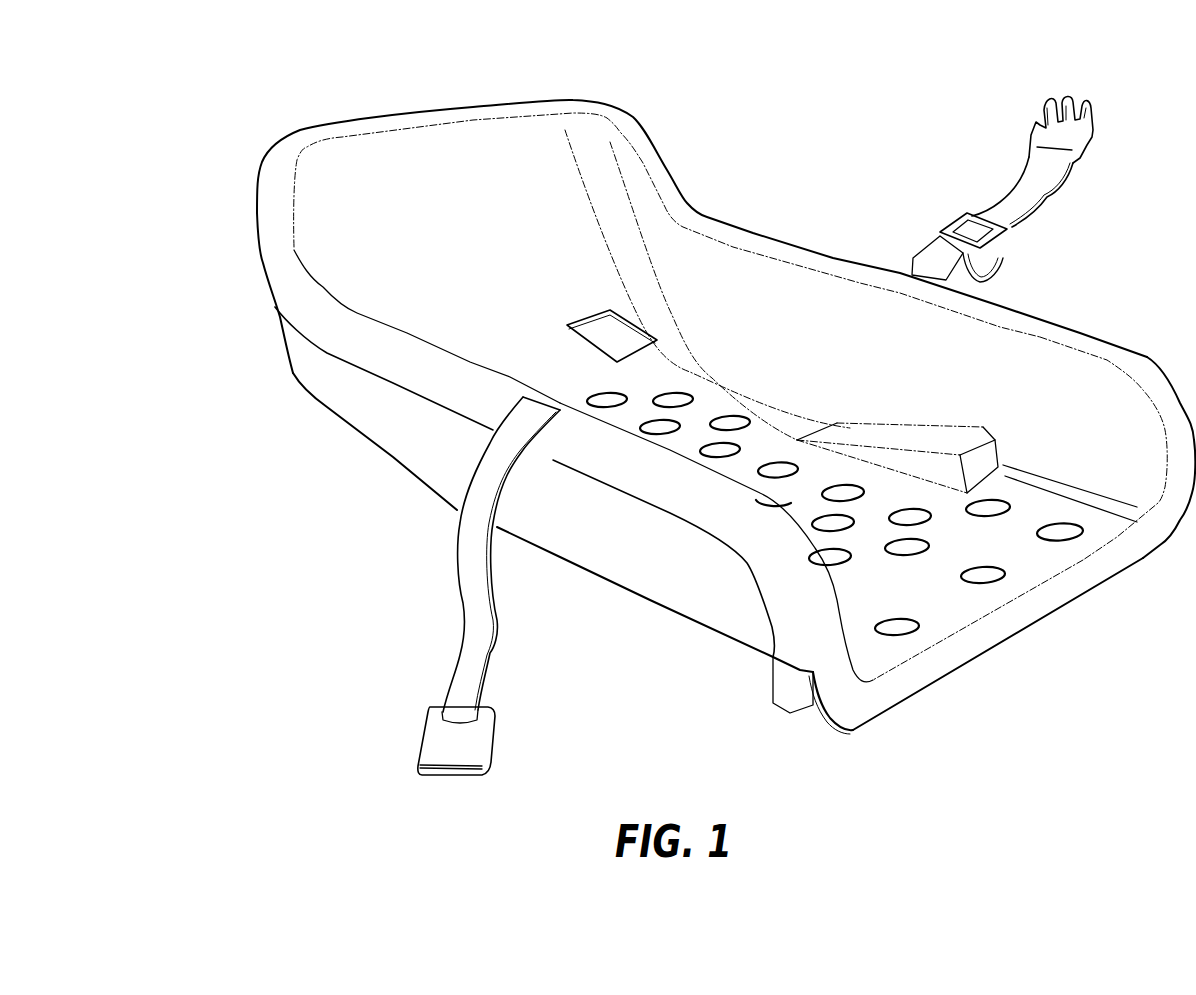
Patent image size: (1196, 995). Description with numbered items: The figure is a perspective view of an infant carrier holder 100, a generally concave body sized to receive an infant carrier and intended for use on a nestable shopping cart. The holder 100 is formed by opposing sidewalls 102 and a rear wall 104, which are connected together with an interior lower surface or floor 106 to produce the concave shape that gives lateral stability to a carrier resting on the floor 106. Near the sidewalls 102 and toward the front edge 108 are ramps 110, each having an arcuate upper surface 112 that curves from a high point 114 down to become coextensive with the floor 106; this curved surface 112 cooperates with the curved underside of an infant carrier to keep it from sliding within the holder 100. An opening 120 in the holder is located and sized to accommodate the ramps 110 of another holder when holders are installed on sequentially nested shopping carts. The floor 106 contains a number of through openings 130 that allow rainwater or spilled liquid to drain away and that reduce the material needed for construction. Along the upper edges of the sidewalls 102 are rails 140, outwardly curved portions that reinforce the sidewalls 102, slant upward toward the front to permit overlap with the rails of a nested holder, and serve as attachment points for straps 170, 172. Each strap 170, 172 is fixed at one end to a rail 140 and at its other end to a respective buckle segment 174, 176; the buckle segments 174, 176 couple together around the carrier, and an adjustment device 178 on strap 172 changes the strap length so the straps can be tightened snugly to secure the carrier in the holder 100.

The infant carrier holder 100 is at (238, 351).
The sidewalls 102 is at (830, 293).
The rear wall 104 is at (432, 153).
The floor 106 is at (482, 335).
The front edge 108 is at (1070, 592).
The ramps 110 is at (870, 430).
The arcuate upper surface 112 is at (918, 430).
The high point 114 is at (970, 437).
The opening 120 is at (608, 340).
The through openings 130 is at (730, 421).
The rails 140 is at (365, 338).
The strap 170 is at (487, 492).
The strap 172 is at (1033, 182).
The buckle segment 174 is at (440, 747).
The buckle segment 176 is at (1040, 110).
The adjustment device 178 is at (962, 217).